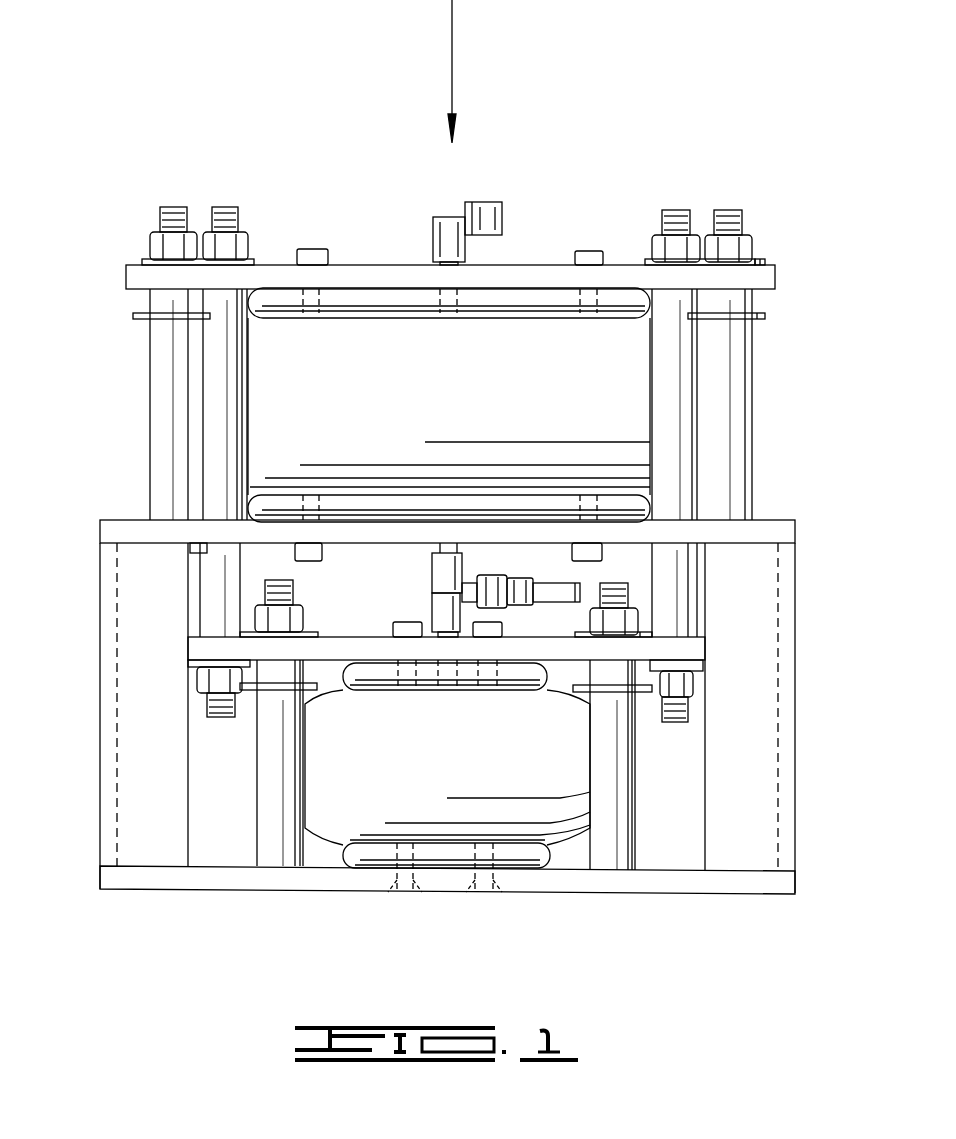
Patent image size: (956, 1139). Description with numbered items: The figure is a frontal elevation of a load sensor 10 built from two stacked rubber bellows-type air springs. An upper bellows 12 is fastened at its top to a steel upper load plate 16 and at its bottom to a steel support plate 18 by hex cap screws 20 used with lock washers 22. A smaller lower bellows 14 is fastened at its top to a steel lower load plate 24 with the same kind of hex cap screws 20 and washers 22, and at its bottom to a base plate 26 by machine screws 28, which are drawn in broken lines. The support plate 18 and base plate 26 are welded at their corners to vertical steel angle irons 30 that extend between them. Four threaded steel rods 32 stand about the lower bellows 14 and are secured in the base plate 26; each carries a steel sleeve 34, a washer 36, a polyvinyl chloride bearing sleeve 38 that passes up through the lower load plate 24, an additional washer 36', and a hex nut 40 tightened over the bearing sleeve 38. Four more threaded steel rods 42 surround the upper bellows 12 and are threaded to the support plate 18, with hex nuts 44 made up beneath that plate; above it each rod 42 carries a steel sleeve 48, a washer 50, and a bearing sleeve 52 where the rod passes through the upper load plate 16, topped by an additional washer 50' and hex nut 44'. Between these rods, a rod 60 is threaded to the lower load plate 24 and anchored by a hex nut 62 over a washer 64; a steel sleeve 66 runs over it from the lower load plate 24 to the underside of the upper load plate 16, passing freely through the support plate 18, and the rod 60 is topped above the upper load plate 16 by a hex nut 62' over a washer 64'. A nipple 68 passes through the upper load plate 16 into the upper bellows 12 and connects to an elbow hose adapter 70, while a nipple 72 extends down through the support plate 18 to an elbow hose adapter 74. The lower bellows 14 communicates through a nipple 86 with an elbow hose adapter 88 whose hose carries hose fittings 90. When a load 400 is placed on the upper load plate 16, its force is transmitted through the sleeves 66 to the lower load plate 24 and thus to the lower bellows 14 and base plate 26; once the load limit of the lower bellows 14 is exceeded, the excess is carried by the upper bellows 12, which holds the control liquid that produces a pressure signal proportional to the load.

The load sensor 10 is at (590, 166).
The upper bellows 12 is at (452, 392).
The lower bellows 14 is at (455, 762).
The upper load plate 16 is at (758, 279).
The support plate 18 is at (780, 522).
The hex cap screws 20 is at (318, 253).
The lock washers 22 is at (297, 262).
The lower load plate 24 is at (695, 655).
The base plate 26 is at (775, 888).
The machine screws 28 is at (485, 893).
The angle irons 30 is at (745, 797).
The threaded steel rods 32 is at (622, 591).
The steel sleeves 34 is at (605, 792).
The washers 36 is at (634, 718).
The additional washers 36' is at (671, 622).
The bearing sleeves 38 is at (610, 671).
The hex nuts 40 is at (615, 617).
The threaded steel rods 42 is at (725, 215).
The hex nuts 44 is at (703, 696).
The hex nuts 44' is at (736, 228).
The steel sleeves 48 is at (720, 425).
The washers 50 is at (762, 328).
The additional washers 50' is at (738, 243).
The bearing sleeves 52 is at (738, 305).
The rod 60 is at (225, 210).
The hex nuts 62 is at (187, 692).
The hex nuts 62' is at (235, 198).
The washers 64 is at (189, 609).
The washers 64' is at (198, 193).
The steel sleeves 66 is at (215, 388).
The nipple 68 is at (433, 262).
The elbow hose adapter 70 is at (455, 207).
The nipple 72 is at (460, 553).
The elbow hose adapter 74 is at (440, 566).
The nipple 86 is at (405, 628).
The elbow hose adapter 88 is at (445, 607).
The hose fittings 90 is at (535, 597).
The load 400 is at (452, 62).